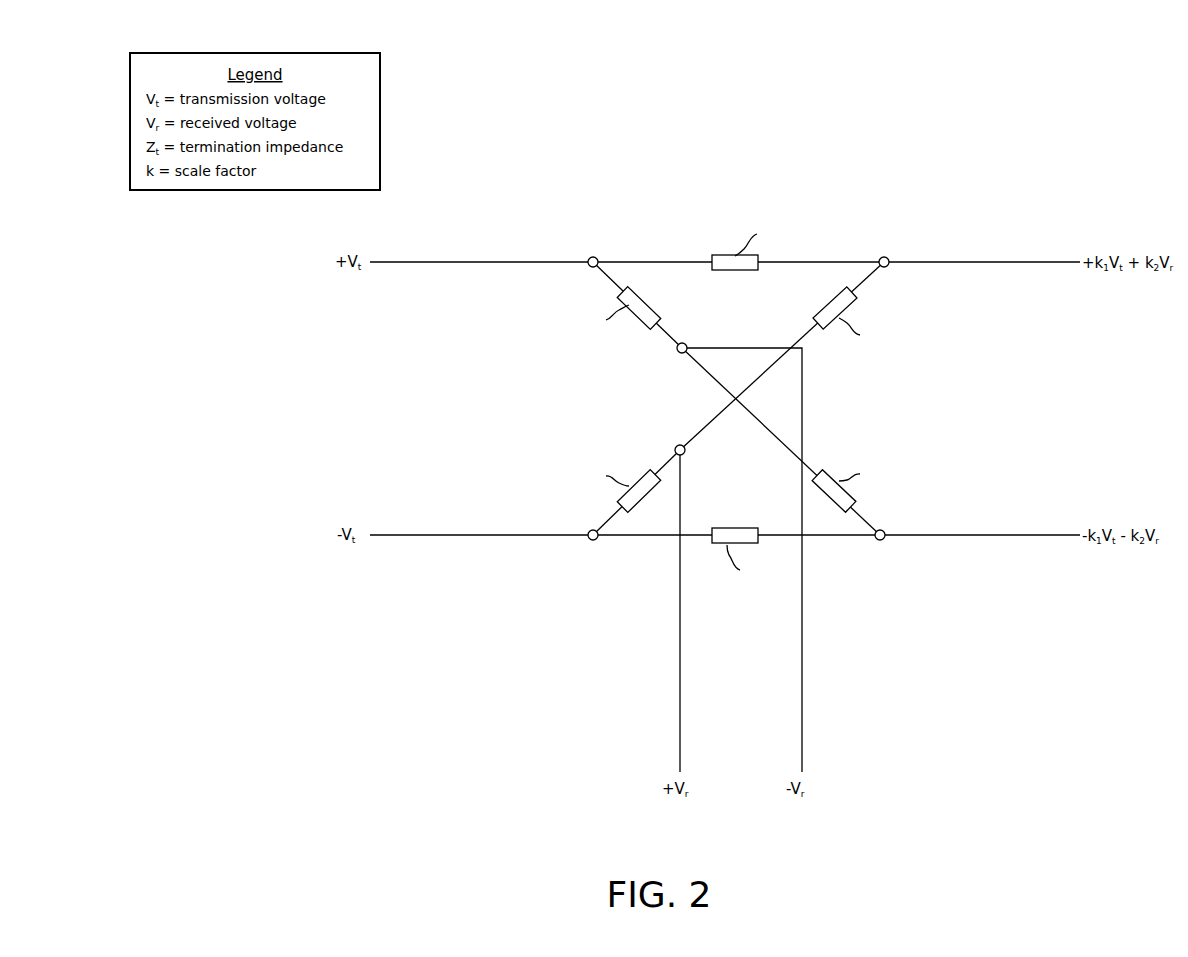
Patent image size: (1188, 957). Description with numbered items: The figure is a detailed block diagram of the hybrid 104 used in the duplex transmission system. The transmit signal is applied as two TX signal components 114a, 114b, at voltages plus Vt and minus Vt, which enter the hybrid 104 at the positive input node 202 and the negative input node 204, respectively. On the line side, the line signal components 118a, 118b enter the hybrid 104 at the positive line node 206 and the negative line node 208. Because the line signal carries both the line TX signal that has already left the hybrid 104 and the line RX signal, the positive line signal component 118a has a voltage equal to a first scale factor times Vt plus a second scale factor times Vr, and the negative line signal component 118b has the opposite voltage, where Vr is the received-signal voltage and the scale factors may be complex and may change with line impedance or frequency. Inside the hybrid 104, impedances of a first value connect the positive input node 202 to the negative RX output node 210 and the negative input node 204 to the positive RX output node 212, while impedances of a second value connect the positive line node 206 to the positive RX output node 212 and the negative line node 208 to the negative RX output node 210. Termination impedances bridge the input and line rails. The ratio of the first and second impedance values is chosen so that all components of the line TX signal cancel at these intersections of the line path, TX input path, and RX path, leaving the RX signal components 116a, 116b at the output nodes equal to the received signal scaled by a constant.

The hybrid 104 is at (1005, 698).
The positive TX signal component 114a is at (415, 262).
The negative TX signal component 114b is at (392, 537).
The RX signal component 116a is at (801, 628).
The RX signal component 116b is at (679, 630).
The positive line signal component 118a is at (1010, 262).
The negative line signal component 118b is at (995, 537).
The positive input node 202 is at (596, 257).
The negative input node 204 is at (594, 541).
The positive line node 206 is at (888, 257).
The negative line node 208 is at (886, 530).
The negative RX output node 210 is at (686, 344).
The positive RX output node 212 is at (683, 456).